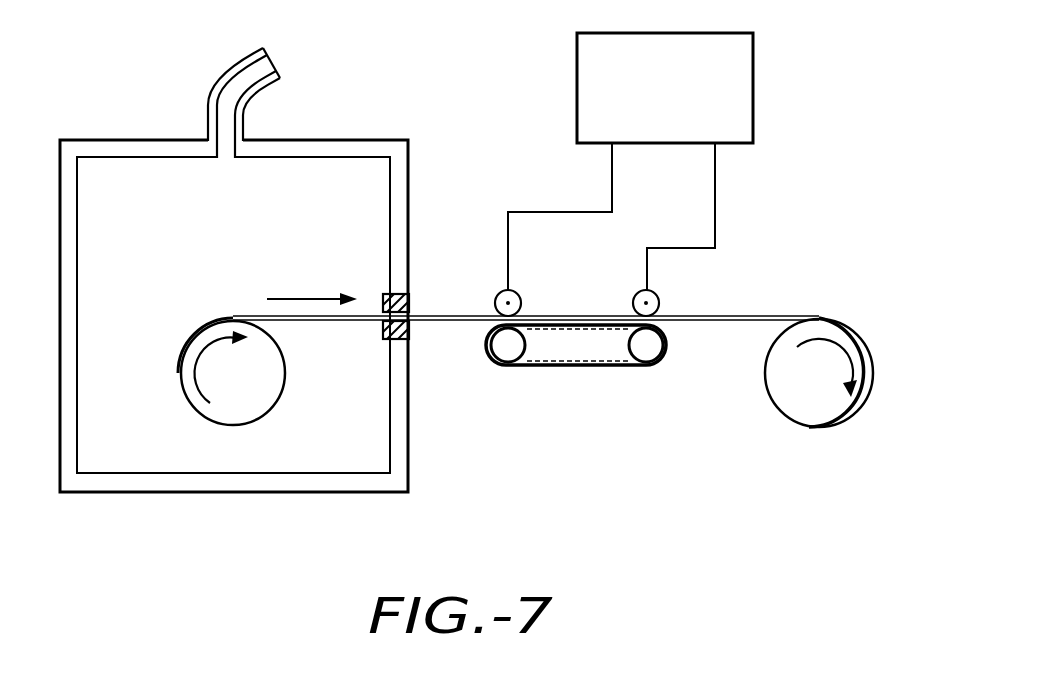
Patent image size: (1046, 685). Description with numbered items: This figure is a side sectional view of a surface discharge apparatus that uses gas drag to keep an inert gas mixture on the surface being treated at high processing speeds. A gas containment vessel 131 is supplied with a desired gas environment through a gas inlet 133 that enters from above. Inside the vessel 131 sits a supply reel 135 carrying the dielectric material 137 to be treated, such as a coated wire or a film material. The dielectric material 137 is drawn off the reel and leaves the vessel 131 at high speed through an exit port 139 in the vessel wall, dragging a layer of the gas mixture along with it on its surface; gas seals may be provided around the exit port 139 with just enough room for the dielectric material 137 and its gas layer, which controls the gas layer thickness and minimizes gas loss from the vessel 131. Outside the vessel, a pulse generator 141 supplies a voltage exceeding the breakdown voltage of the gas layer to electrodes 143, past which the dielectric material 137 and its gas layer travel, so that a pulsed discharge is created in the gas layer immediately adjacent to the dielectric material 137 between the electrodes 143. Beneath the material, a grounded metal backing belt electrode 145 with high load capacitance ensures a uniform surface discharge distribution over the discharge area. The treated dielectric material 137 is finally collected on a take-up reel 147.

The gas containment vessel 131 is at (247, 233).
The gas inlet 133 is at (267, 63).
The supply reel 135 is at (225, 407).
The dielectric material 137 is at (349, 323).
The exit port 139 is at (383, 296).
The pulse generator 141 is at (737, 85).
The electrodes 143 is at (497, 302).
The grounded metal backing belt electrode 145 is at (558, 367).
The take-up reel 147 is at (800, 395).